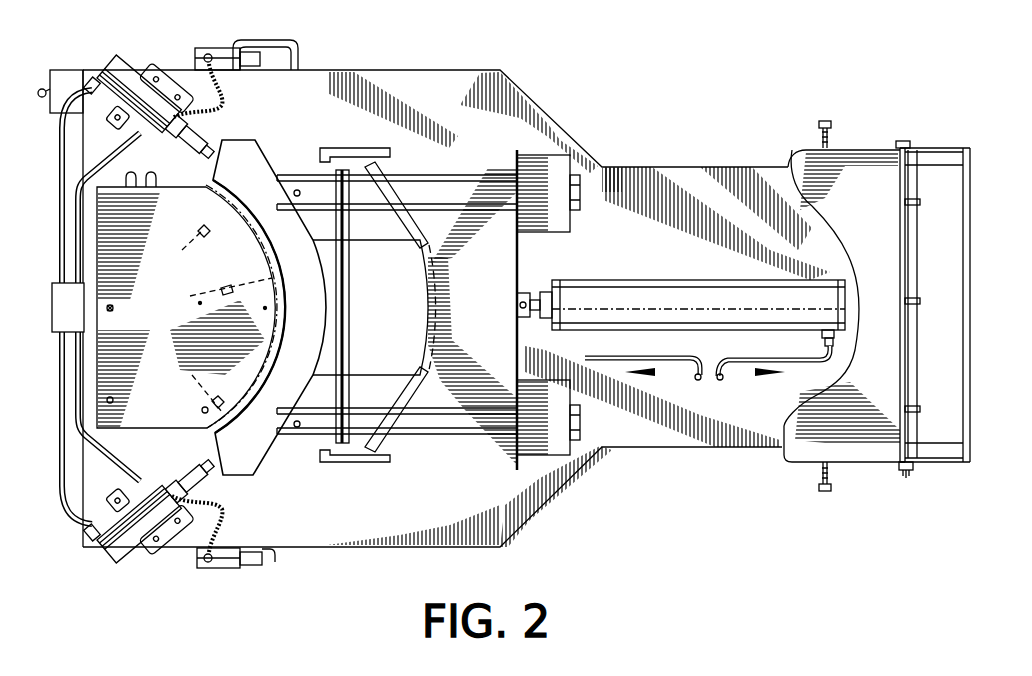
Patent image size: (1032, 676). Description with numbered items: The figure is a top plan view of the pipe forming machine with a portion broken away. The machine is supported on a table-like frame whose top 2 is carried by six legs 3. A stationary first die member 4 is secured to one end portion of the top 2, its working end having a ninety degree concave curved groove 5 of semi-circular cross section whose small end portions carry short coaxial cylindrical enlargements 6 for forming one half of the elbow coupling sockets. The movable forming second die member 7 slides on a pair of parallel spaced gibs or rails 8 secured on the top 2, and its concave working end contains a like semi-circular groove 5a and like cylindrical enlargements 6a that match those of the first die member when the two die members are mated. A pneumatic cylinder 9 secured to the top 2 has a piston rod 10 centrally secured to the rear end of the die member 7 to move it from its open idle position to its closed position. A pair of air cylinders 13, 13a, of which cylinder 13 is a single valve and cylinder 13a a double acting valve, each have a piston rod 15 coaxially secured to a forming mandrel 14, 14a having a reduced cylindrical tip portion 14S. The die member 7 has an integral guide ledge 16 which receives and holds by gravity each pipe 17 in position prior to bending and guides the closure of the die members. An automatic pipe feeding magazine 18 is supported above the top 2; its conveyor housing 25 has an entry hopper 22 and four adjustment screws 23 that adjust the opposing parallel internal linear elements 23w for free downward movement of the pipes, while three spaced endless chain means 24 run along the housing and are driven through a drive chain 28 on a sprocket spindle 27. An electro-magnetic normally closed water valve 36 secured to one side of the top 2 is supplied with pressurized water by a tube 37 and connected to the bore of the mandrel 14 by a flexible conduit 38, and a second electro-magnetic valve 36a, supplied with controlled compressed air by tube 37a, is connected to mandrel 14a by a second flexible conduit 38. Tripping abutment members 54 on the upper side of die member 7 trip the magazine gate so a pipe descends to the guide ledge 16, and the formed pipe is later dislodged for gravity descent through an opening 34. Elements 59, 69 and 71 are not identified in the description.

The top 2 is at (465, 80).
The legs 3 is at (477, 123).
The stationary first die member 4 is at (143, 321).
The concave curved groove 5 is at (222, 291).
The semi-circular groove 5a is at (438, 274).
The cylindrical enlargements 6 is at (194, 318).
The cylindrical enlargements 6a is at (378, 192).
The movable forming second die member 7 is at (468, 316).
The gibs or rails 8 is at (372, 207).
The pneumatic cylinder 9 is at (695, 311).
The piston rod 10 is at (545, 292).
The air cylinder 13 is at (124, 560).
The air cylinder 13a is at (135, 60).
The mandrel 14 is at (185, 467).
The forming mandrel 14a is at (200, 142).
The reduced cylindrical tip portion 14S is at (218, 166).
The piston rod 15 is at (178, 118).
The guide ledge 16 is at (383, 316).
The pipe 17 is at (350, 273).
The automatic pipe feeding magazine 18 is at (772, 502).
The entry hopper 22 is at (900, 245).
The adjustment screws 23 is at (828, 122).
The internal linear elements 23w is at (936, 162).
The endless chain means 24 is at (918, 203).
The conveyor housing 25 is at (836, 214).
The sprocket spindle 27 is at (918, 274).
The drive chain 28 is at (900, 478).
The opening 34 is at (301, 129).
The water valve 36 is at (218, 570).
The second electro-magnetic valve 36a is at (203, 48).
The tube 37 is at (270, 556).
The tube 37a is at (275, 40).
The flexible conduit 38 is at (222, 99).
The tripping abutment members 54 is at (330, 149).
The stop 59 is at (44, 89).
The pipe 69 is at (65, 129).
The pipe 71 is at (112, 160).